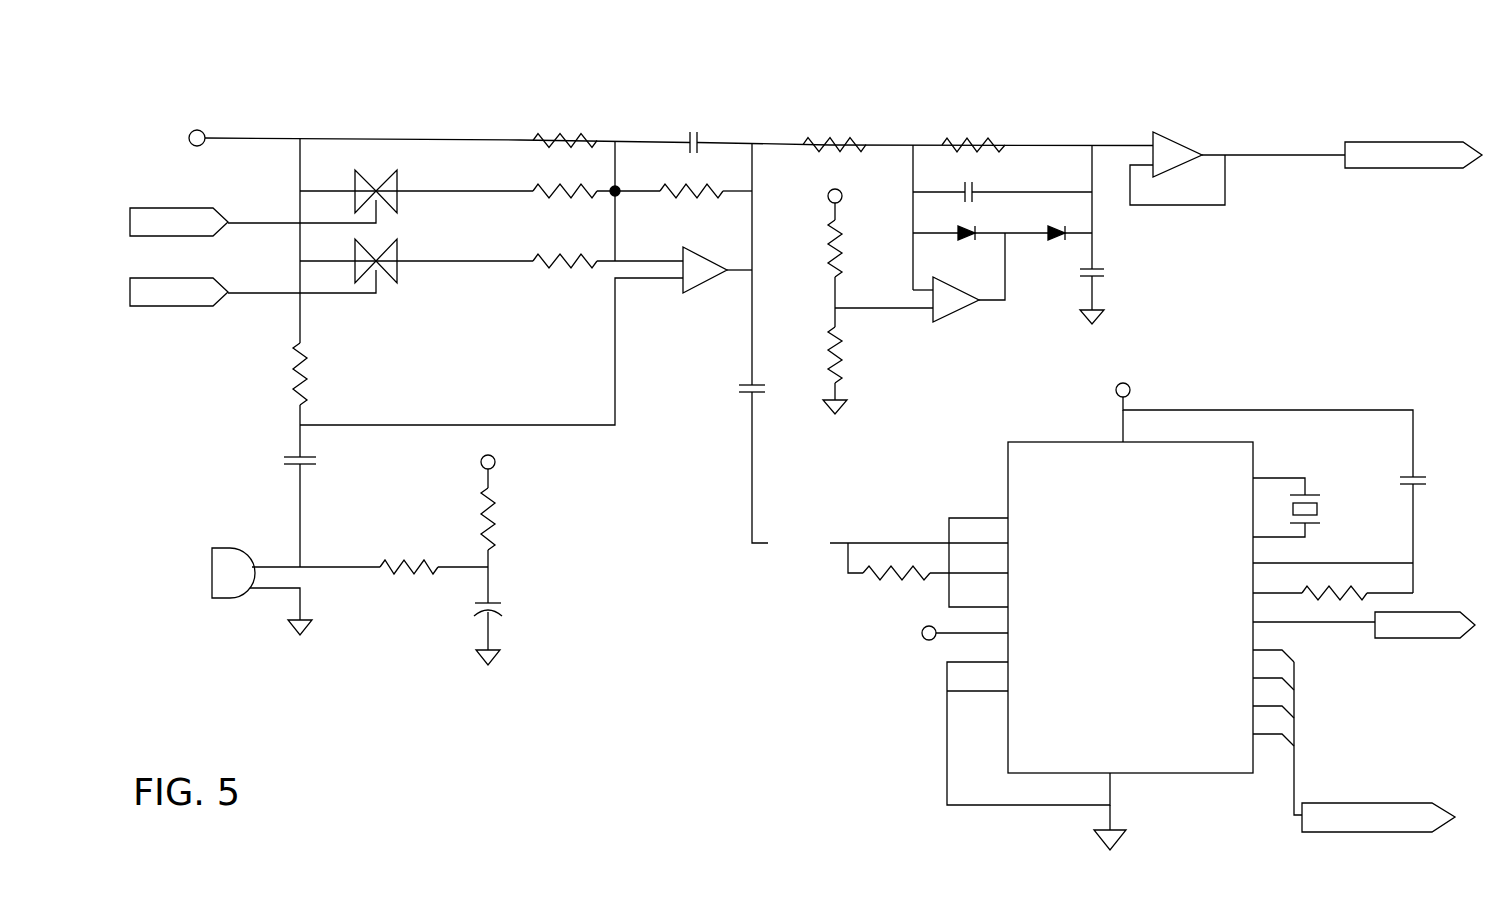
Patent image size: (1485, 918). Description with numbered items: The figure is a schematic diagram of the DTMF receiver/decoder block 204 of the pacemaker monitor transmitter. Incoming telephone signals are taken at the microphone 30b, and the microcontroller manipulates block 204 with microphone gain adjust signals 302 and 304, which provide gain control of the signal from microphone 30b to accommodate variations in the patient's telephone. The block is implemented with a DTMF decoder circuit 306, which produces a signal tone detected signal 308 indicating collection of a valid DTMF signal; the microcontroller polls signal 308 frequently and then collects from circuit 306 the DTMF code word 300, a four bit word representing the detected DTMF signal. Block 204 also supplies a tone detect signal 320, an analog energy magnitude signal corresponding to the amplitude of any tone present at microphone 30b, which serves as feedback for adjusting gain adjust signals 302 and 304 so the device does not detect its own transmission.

The DTMF receiver/decoder block 204 is at (198, 102).
The microphone gain adjust signal 302 is at (273, 224).
The microphone gain adjust signal 304 is at (266, 294).
The microphone 30b is at (250, 598).
The DTMF decoder circuit 306 is at (1008, 470).
The tone detect signal 320 is at (1302, 157).
The signal tone detected (STD) signal 308 is at (1295, 624).
The DTMF code word 300 is at (1294, 787).